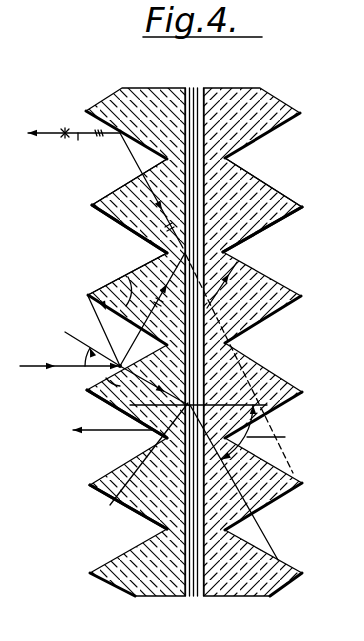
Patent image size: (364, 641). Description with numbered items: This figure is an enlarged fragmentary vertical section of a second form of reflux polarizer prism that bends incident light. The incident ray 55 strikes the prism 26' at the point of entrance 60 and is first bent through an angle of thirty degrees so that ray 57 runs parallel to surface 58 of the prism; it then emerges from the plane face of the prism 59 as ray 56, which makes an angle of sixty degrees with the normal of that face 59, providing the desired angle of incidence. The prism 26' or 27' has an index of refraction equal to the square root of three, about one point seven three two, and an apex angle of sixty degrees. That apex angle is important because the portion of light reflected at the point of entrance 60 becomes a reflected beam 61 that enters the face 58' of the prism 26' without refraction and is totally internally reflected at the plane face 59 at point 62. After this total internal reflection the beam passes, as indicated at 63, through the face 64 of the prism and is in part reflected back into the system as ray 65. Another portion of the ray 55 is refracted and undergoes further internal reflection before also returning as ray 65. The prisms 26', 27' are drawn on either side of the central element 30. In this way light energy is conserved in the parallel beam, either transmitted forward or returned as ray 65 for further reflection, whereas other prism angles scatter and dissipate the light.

The prism 26' is at (135, 327).
The prism 27' is at (267, 336).
The central core 30 is at (205, 90).
The incident ray 55 is at (62, 367).
The emerging ray 56 is at (263, 530).
The bent ray 57 is at (140, 378).
The surface of the prism 58 is at (113, 432).
The face of the prism 58' is at (122, 279).
The plane face of the prism 59 is at (127, 495).
The point of entrance 60 is at (120, 366).
The reflected beam 61 is at (163, 252).
The point of total internal reflection 62 is at (262, 205).
The internally reflected ray 63 is at (130, 152).
The face of the prism 64 is at (123, 185).
The returned ray 65 is at (74, 144).